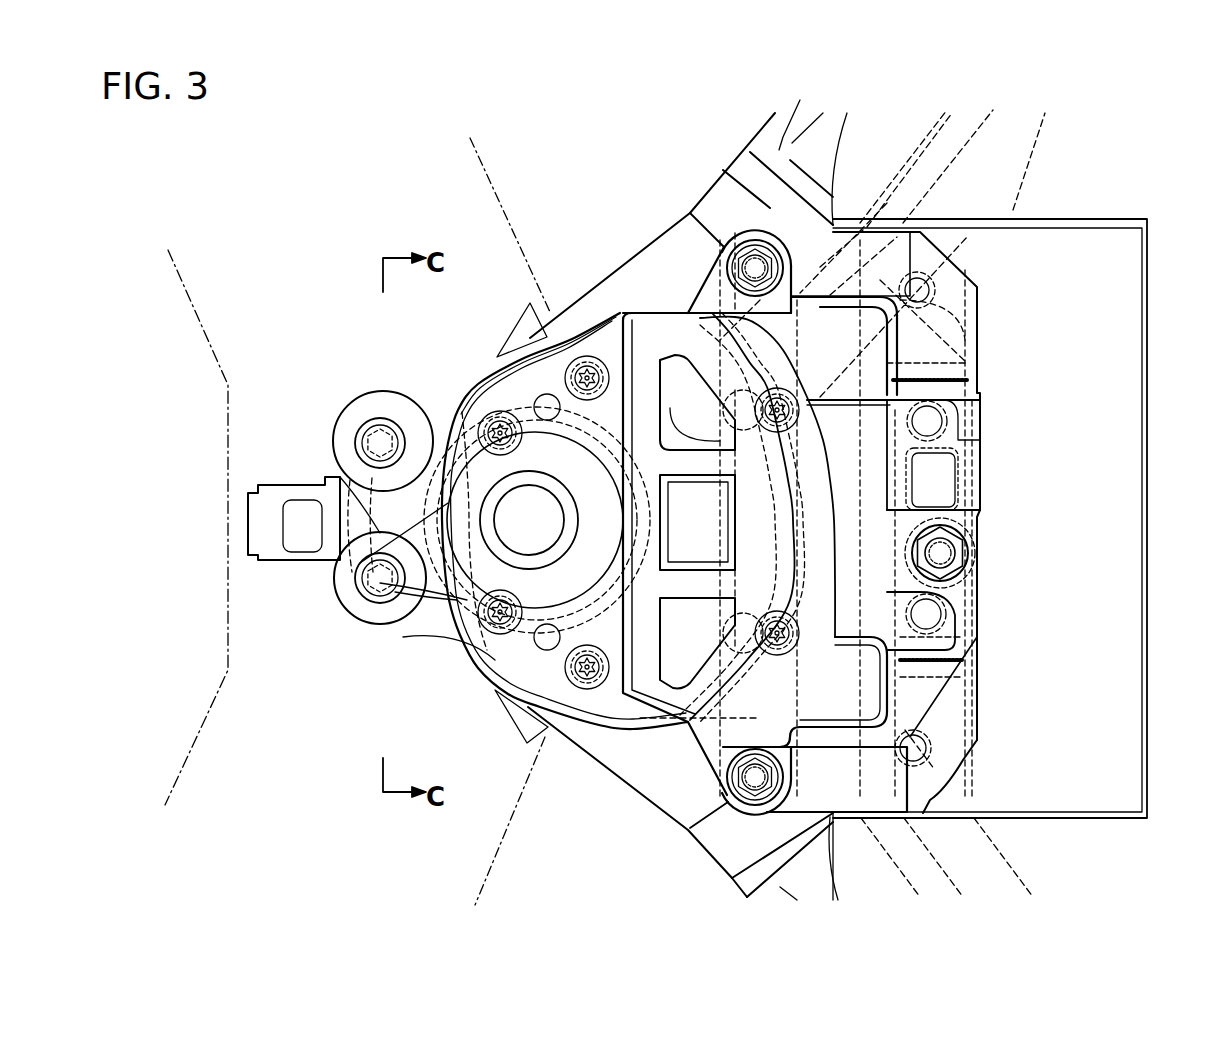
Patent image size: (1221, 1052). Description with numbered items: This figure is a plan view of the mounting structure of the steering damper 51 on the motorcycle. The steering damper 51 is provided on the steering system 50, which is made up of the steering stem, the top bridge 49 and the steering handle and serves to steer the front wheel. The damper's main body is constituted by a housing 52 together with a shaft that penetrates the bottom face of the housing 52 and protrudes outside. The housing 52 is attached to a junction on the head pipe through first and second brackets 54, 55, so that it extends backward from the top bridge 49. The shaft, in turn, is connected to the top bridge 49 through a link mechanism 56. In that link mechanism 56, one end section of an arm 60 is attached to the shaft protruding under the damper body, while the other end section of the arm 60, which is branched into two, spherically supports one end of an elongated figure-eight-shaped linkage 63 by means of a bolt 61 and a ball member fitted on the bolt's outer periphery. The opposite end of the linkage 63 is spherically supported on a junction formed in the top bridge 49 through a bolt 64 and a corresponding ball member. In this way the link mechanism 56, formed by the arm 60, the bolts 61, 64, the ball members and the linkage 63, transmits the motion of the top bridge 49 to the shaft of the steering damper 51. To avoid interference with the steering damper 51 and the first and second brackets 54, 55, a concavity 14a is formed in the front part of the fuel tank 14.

The fuel tank 14 is at (822, 152).
The concavity 14a is at (1143, 258).
The top bridge 49 is at (207, 330).
The steering system 50 is at (500, 170).
The steering damper 51 is at (636, 290).
The housing 52 is at (478, 667).
The first bracket 54 is at (948, 342).
The second bracket 55 is at (937, 713).
The link mechanism 56 is at (404, 385).
The arm 60 is at (440, 602).
The bolt 61 is at (383, 578).
The linkage 63 is at (343, 437).
The bolt 64 is at (388, 440).